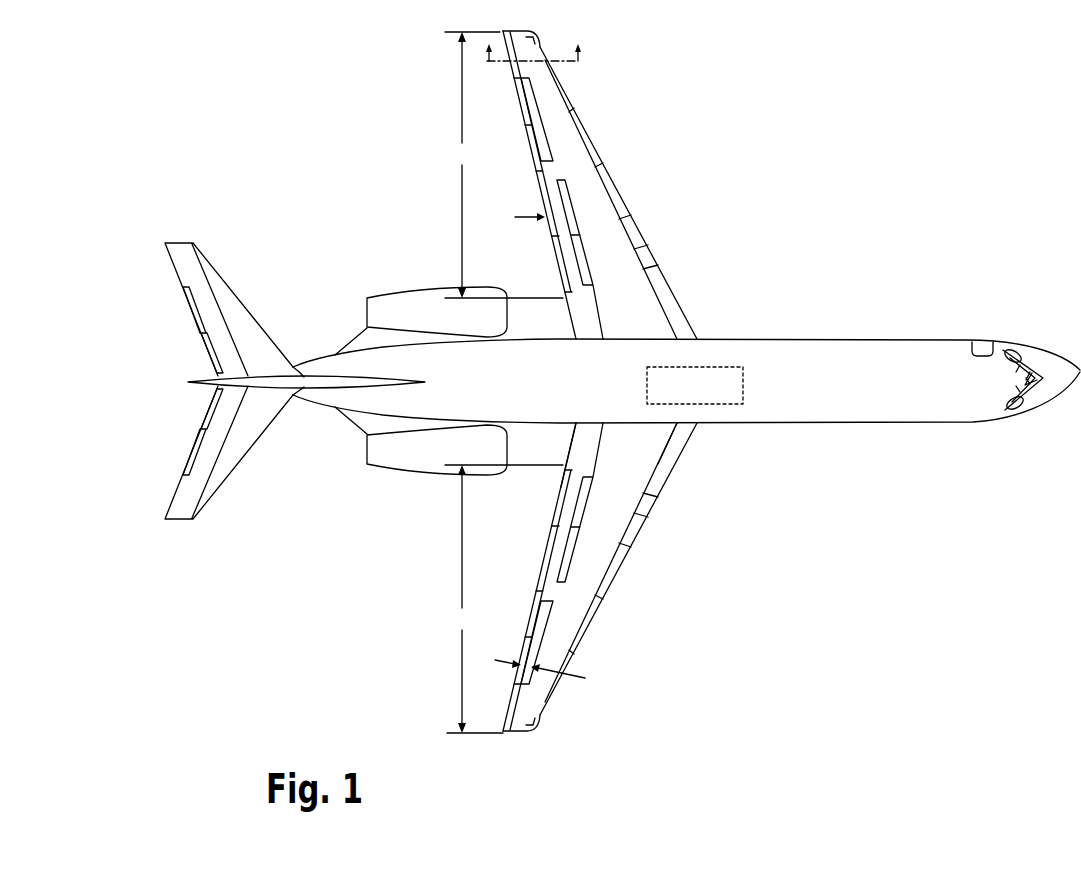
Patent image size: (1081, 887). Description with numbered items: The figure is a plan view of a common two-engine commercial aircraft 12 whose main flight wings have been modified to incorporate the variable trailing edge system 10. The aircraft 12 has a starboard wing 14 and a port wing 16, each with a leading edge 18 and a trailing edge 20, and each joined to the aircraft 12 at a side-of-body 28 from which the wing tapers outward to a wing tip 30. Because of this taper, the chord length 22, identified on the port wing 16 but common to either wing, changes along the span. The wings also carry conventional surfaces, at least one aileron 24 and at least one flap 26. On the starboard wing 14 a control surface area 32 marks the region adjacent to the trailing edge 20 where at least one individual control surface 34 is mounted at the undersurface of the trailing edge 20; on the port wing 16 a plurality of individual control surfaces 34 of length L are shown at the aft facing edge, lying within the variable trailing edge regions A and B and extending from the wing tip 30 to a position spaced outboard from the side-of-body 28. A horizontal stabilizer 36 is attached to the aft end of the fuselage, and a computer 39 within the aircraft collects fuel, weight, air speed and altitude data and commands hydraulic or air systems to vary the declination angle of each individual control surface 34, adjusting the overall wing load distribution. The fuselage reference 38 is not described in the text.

The variable trailing edge system 10 is at (396, 100).
The aircraft 12 is at (753, 339).
The starboard wing 14 is at (610, 601).
The port wing 16 is at (589, 185).
The leading edge 18 is at (652, 517).
The trailing edge 20 is at (570, 439).
The chord length 22 is at (636, 219).
The aileron 24 is at (563, 570).
The flap 26 is at (547, 612).
The side-of-body 28 is at (657, 423).
The wing tip 30 is at (530, 733).
The control surface area 32 is at (553, 537).
The individual control surface 34 is at (538, 171).
The horizontal stabilizer 36 is at (227, 282).
The fuselage nose section 38 is at (827, 413).
The computer 39 is at (707, 367).